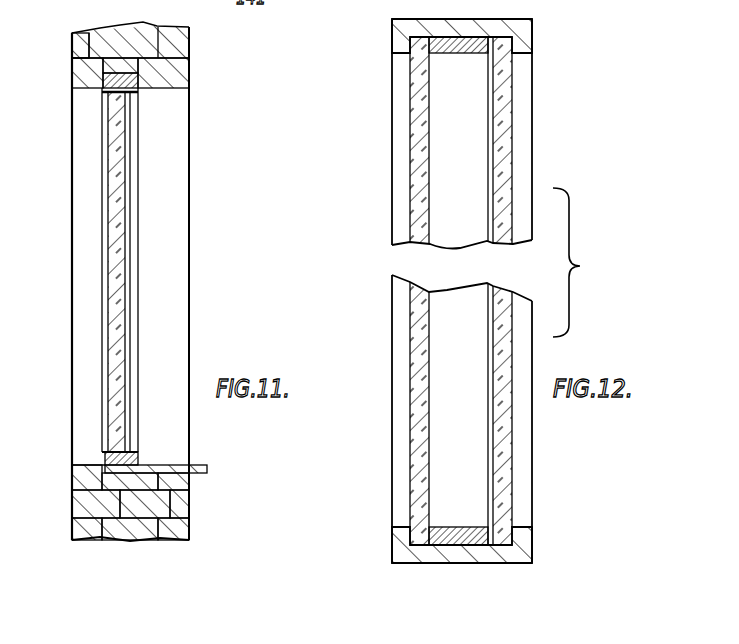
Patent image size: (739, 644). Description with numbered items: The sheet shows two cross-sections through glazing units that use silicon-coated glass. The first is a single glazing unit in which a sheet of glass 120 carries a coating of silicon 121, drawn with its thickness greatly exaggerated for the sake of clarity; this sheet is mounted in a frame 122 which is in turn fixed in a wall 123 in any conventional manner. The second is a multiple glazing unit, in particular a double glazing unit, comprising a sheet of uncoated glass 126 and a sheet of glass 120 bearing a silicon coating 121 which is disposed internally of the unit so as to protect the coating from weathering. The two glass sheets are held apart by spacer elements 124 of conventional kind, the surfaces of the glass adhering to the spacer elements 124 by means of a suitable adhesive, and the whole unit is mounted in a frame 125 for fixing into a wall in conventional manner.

In FIG. 11, the sheet of glass 120 is at (112, 261).
In FIG. 12, the sheet of glass 120 is at (507, 143).
In FIG. 11, the coating of silicon 121 is at (132, 177).
In FIG. 12, the coating of silicon 121 is at (490, 141).
In FIG. 11, the frame 122 is at (106, 80).
In FIG. 11, the wall 123 is at (180, 45).
In FIG. 12, the spacer elements 124 is at (448, 54).
In FIG. 12, the frame 125 is at (528, 40).
In FIG. 12, the sheet of uncoated glass 126 is at (418, 198).